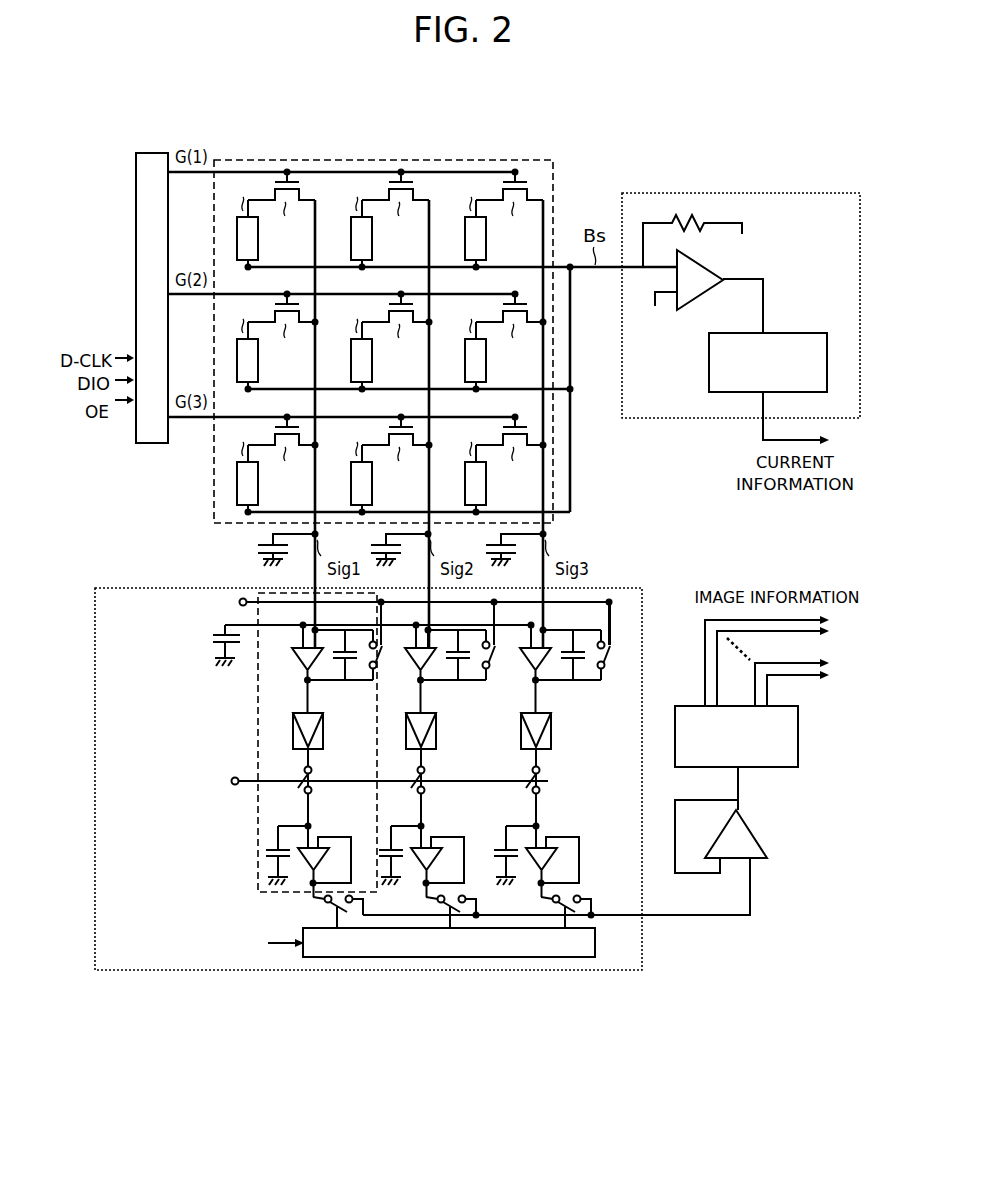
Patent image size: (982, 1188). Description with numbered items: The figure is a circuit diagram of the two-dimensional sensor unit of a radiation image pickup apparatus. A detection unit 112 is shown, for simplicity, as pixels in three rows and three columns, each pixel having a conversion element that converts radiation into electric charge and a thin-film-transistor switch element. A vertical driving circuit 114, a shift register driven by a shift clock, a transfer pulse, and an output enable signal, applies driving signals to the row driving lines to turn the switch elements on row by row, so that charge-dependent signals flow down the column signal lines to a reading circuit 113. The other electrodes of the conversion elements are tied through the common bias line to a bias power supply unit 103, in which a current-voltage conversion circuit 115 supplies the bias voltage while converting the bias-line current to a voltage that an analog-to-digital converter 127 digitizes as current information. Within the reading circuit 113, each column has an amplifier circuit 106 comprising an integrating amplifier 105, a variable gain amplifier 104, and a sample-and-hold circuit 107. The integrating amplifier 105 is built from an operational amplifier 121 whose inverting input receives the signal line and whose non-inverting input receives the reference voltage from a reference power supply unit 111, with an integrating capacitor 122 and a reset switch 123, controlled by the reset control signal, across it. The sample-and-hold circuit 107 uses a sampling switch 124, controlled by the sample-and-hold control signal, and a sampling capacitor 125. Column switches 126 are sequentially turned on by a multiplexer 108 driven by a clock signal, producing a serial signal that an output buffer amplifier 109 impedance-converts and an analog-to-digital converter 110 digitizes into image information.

The bias power supply unit 103 is at (741, 295).
The variable gain amplifier 104 is at (292, 730).
The integrating amplifier 105 is at (561, 730).
The amplifier circuit 106 is at (292, 714).
The sample-and-hold circuit 107 is at (281, 845).
The multiplexer 108 is at (573, 958).
The output buffer amplifier 109 is at (757, 833).
The analog-to-digital converter 110 is at (799, 727).
The reference power supply unit 111 is at (209, 635).
The detection unit 112 is at (389, 159).
The reading circuit 113 is at (152, 972).
The vertical driving circuit 114 is at (143, 153).
The current-voltage conversion circuit 115 is at (716, 259).
The operational amplifier 121 is at (538, 669).
The integrating capacitor 122 is at (572, 681).
The reset switch 123 is at (618, 658).
The sampling switch 124 is at (303, 779).
The sampling capacitor 125 is at (271, 859).
The switch 126 is at (329, 906).
The analog-to-digital converter 127 is at (802, 333).